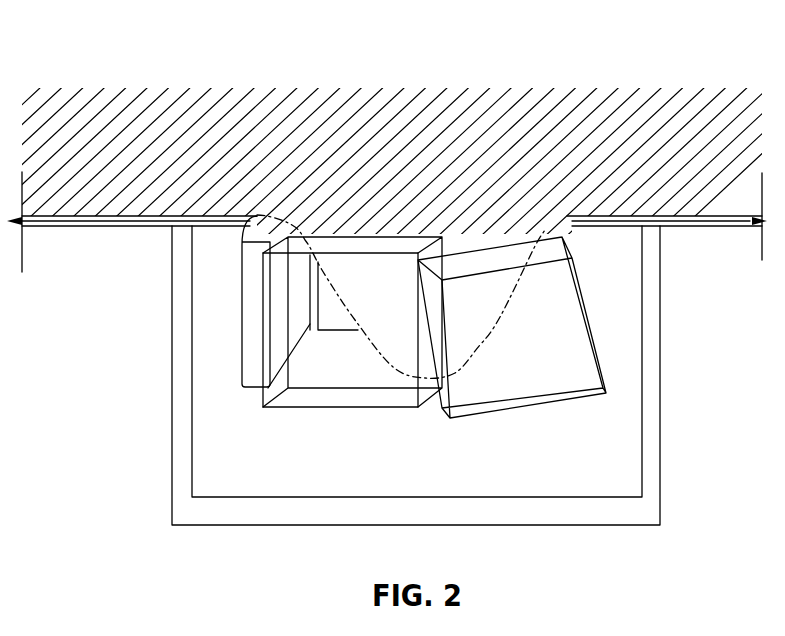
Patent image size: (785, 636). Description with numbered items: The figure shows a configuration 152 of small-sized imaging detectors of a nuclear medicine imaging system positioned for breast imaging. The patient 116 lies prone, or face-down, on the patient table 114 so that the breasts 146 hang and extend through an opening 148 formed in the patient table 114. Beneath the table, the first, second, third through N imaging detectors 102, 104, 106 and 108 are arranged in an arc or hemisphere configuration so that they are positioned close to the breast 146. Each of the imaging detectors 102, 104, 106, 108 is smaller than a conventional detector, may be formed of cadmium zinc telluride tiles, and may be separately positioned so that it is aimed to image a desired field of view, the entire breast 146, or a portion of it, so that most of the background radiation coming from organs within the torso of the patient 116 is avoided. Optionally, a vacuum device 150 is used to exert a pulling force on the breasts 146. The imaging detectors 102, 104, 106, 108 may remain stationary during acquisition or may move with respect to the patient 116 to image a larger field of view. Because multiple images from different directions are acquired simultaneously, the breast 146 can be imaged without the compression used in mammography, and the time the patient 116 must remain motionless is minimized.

The configuration 152 is at (123, 62).
The patient 116 is at (442, 160).
The patient table 114 is at (100, 228).
The vacuum device 150 is at (182, 474).
The first imaging detector 102 is at (252, 388).
The second imaging detector 104 is at (352, 372).
The third imaging detector 106 is at (517, 380).
The N imaging detector 108 is at (330, 312).
The breast 146 is at (412, 230).
The opening 148 is at (565, 231).